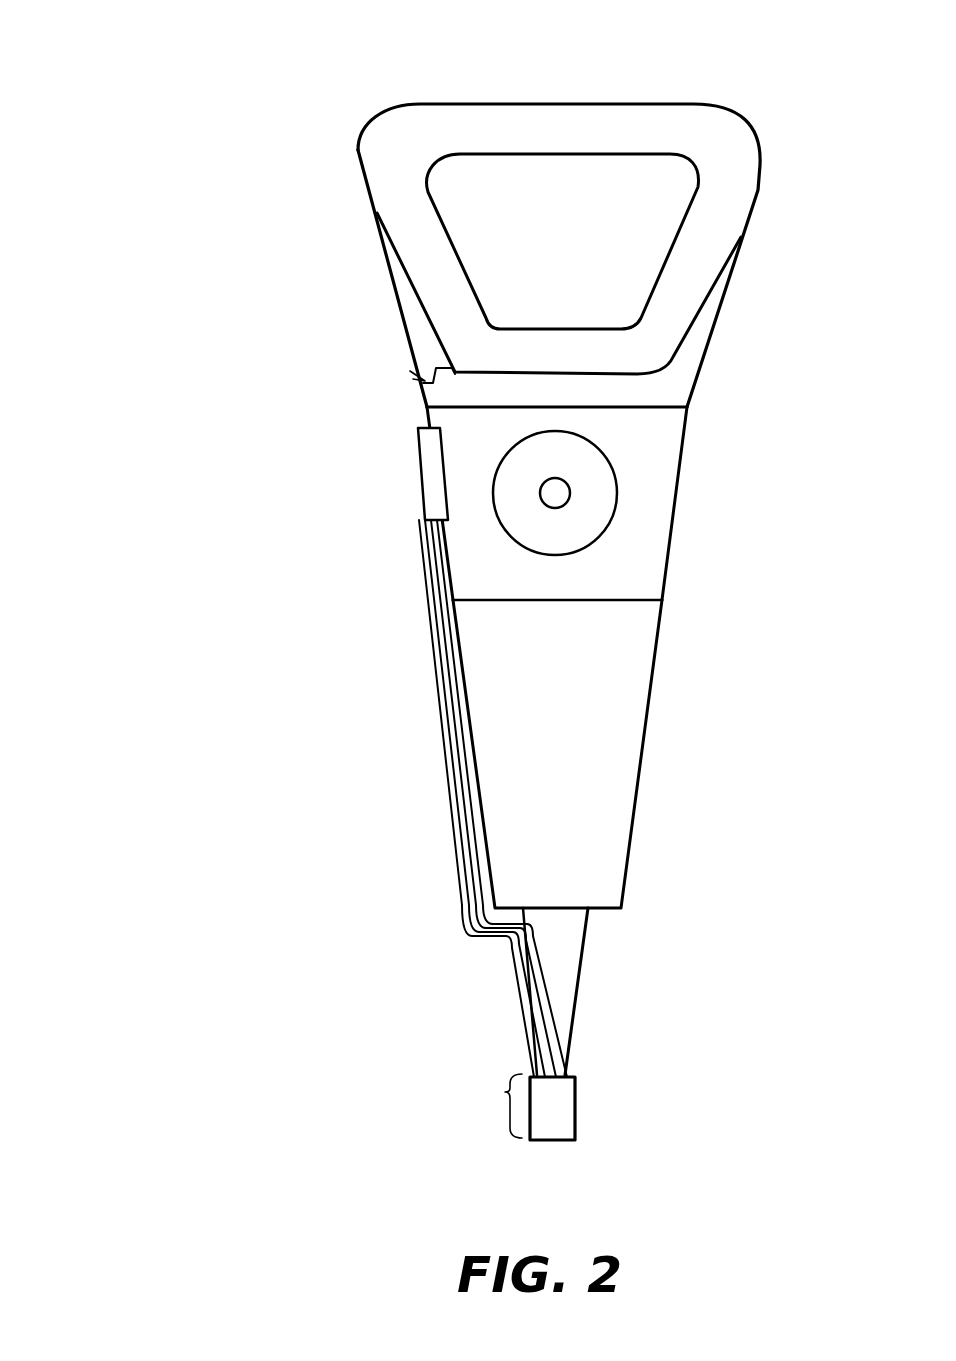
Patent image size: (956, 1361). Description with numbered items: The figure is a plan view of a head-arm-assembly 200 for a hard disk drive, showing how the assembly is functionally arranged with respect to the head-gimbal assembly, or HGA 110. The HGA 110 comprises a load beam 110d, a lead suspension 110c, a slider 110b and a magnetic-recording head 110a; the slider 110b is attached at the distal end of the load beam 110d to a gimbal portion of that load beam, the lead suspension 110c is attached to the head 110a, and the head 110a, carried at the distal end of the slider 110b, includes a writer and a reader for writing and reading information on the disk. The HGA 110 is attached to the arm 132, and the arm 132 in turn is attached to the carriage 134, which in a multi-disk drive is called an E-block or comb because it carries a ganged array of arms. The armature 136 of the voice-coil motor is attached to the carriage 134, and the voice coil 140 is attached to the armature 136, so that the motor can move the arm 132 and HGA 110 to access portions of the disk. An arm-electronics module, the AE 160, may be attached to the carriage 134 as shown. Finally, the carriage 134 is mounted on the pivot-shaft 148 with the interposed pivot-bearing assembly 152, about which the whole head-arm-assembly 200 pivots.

The handheld device assembly 200 is at (160, 102).
The voice coil 140 is at (425, 250).
The armature 136 is at (428, 345).
The AE 160 is at (432, 480).
The pivot-shaft 148 is at (555, 493).
The pivot-bearing assembly 152 is at (600, 502).
The carriage 134 is at (618, 503).
The arm 132 is at (560, 703).
The HGA 110 is at (369, 830).
The load beam 110d is at (557, 945).
The lead suspension 110c is at (527, 990).
The slider 110b is at (522, 1077).
The magnetic-recording head 110a is at (540, 1123).